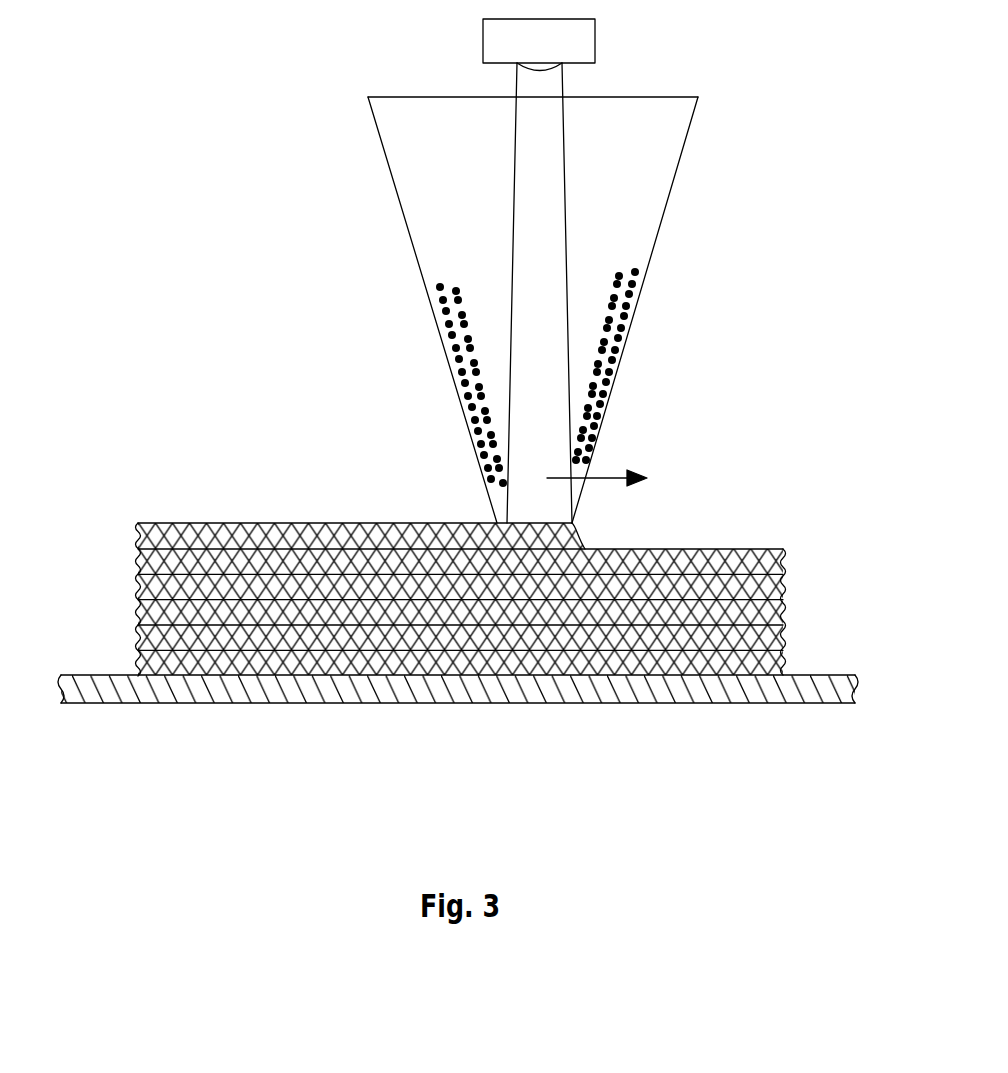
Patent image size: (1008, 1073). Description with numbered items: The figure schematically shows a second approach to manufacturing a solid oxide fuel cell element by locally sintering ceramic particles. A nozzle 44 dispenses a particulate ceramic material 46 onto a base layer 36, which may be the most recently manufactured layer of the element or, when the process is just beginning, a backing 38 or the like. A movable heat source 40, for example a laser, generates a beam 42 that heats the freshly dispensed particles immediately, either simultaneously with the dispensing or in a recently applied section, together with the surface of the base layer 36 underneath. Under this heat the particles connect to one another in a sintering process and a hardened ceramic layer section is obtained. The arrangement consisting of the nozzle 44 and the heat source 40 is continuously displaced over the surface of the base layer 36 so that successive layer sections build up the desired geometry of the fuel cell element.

The base layer 36 is at (772, 552).
The backing 38 is at (822, 688).
The heat source 40 is at (575, 40).
The beam 42 is at (535, 258).
The nozzle 44 is at (650, 168).
The particulate ceramic material 46 is at (604, 330).